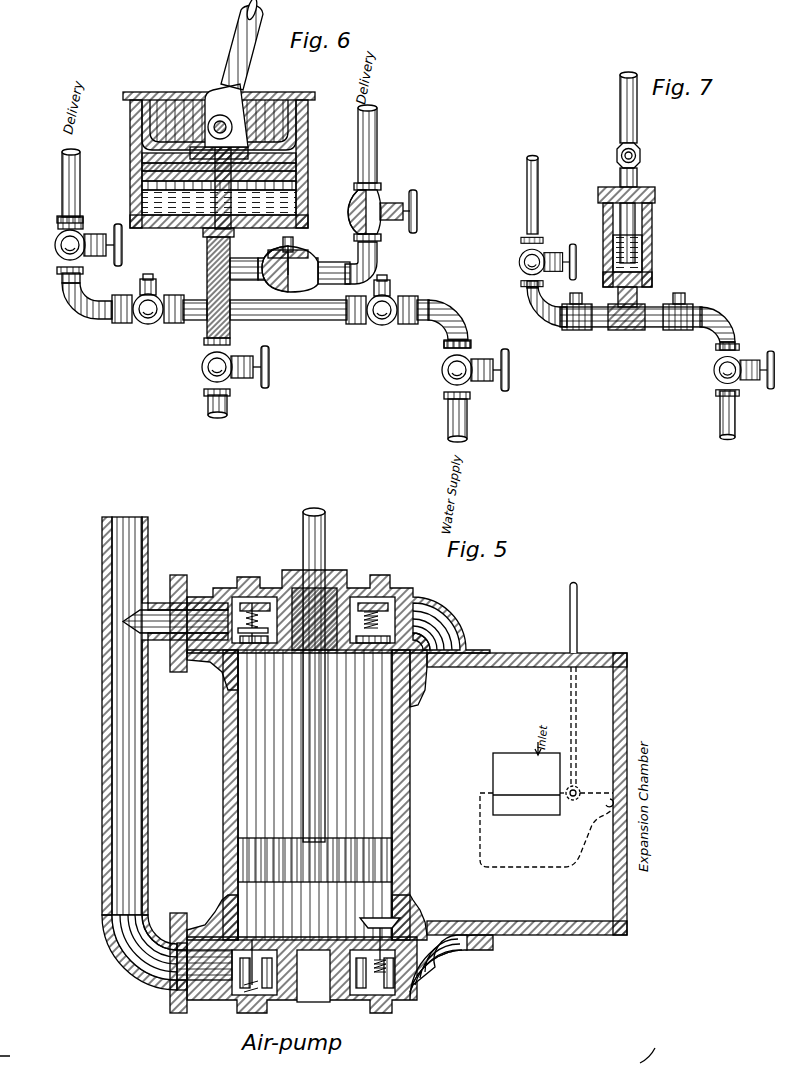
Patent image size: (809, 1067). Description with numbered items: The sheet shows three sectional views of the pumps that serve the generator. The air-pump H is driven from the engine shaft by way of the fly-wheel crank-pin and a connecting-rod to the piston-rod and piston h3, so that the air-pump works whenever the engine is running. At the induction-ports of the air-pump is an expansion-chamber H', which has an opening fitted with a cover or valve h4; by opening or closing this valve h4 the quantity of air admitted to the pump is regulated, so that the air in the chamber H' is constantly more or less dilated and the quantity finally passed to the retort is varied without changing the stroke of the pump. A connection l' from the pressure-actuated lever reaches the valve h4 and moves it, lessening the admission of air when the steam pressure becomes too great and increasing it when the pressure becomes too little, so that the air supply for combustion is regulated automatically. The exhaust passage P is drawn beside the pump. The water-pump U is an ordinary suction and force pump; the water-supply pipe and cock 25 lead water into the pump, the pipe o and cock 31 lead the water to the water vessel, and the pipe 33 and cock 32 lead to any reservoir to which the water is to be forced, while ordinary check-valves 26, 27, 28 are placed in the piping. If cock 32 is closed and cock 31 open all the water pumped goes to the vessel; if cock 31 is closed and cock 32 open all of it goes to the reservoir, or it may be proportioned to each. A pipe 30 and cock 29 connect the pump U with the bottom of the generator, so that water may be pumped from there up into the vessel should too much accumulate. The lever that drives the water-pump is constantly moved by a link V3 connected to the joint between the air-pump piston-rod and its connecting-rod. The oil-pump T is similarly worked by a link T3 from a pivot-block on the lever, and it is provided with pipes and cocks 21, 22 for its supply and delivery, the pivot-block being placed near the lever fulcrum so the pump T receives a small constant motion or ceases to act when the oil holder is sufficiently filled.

In FIG. 6, the pipe o is at (64, 189).
In FIG. 6, the water-pump U is at (212, 160).
In FIG. 6, the link V3 is at (234, 73).
In FIG. 6, the cock 31 is at (100, 245).
In FIG. 6, the check-valve 28 is at (148, 310).
In FIG. 6, the cock 29 is at (248, 367).
In FIG. 6, the pipe 30 is at (209, 412).
In FIG. 6, the check-valve 27 is at (276, 264).
In FIG. 6, the check-valve 26 is at (382, 313).
In FIG. 6, the water-supply pipe and cock 25 is at (475, 391).
In FIG. 6, the cock 32 is at (394, 212).
In FIG. 6, the pipe 33 is at (378, 144).
In FIG. 7, the link T3 is at (616, 129).
In FIG. 7, the oil-pump T is at (632, 247).
In FIG. 7, the valve 22 is at (534, 222).
In FIG. 7, the valve 21 is at (733, 391).
In FIG. 5, the exhaust pipe P is at (155, 753).
In FIG. 5, the air-pump H is at (340, 791).
In FIG. 5, the piston-rod and piston h3 is at (315, 695).
In FIG. 5, the expansion-chamber H' is at (527, 794).
In FIG. 5, the cover or valve h4 is at (546, 810).
In FIG. 5, the connection l' is at (586, 692).